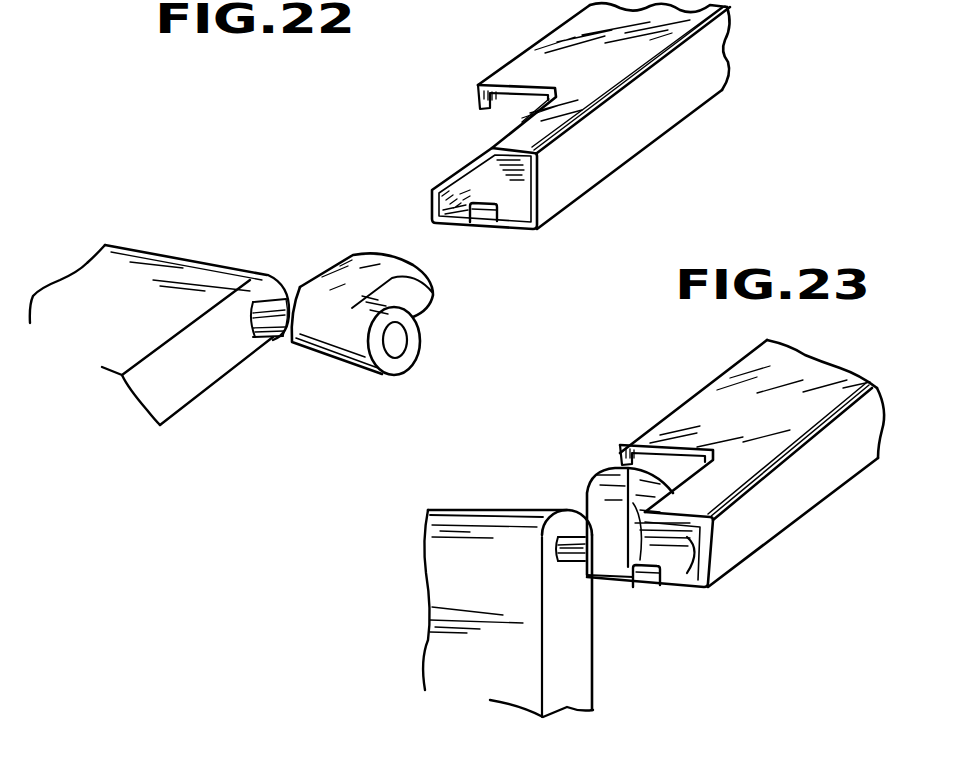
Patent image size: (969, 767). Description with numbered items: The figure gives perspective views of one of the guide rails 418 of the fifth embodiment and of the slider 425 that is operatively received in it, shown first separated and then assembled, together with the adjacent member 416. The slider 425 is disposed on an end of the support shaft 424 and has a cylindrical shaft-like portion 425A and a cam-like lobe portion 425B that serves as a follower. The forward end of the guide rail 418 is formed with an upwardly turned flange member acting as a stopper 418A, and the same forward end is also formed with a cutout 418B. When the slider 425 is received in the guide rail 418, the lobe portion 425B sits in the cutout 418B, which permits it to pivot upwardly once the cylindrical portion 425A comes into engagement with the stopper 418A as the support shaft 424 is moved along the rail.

In FIG. 22, the frame member 416 is at (180, 378).
In FIG. 23, the frame member 416 is at (584, 655).
In FIG. 22, the guide rail 418 is at (670, 90).
In FIG. 23, the guide rail 418 is at (788, 502).
In FIG. 22, the stopper 418A is at (484, 209).
In FIG. 23, the stopper 418A is at (642, 576).
In FIG. 22, the cutout 418B is at (500, 140).
In FIG. 22, the support shaft 424 is at (273, 341).
In FIG. 23, the support shaft 424 is at (557, 553).
In FIG. 22, the slider 425 is at (325, 250).
In FIG. 22, the cylindrical shaft-like portion 425A is at (373, 376).
In FIG. 23, the cylindrical shaft-like portion 425A is at (703, 585).
In FIG. 22, the cam-like lobe portion 425B is at (433, 284).
In FIG. 23, the cam-like lobe portion 425B is at (600, 490).